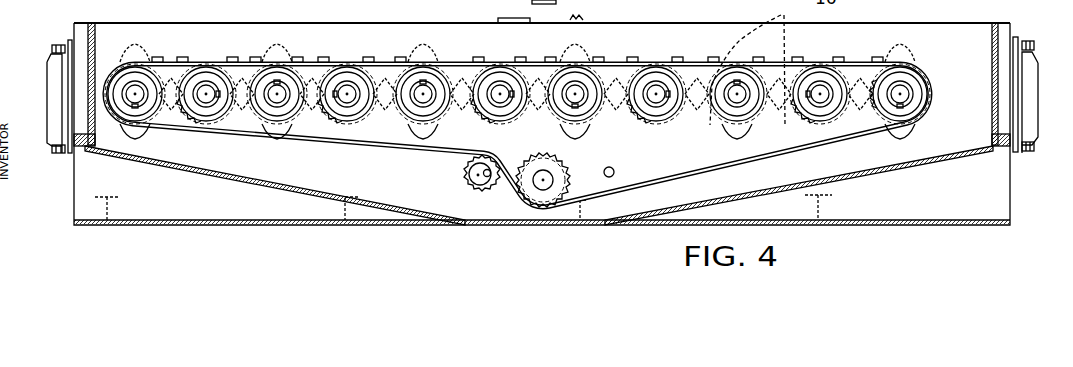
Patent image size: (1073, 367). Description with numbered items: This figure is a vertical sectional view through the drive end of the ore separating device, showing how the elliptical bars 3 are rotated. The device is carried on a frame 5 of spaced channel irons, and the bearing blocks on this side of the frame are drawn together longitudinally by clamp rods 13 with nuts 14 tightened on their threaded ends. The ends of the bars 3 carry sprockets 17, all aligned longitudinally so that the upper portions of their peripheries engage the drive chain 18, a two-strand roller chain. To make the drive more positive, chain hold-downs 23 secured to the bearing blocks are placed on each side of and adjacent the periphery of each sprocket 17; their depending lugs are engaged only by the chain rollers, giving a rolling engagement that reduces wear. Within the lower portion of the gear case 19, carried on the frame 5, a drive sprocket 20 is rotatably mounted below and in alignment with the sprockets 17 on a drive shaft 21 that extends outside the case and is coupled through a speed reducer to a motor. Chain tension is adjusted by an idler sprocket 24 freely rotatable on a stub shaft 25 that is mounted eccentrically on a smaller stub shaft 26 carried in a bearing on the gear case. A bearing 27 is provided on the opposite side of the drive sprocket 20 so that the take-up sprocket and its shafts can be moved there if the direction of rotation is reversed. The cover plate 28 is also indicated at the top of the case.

The bars 3 is at (751, 63).
The frame 5 is at (987, 192).
The clamp rods 13 is at (72, 40).
The nuts 14 is at (55, 43).
The sprockets 17 is at (437, 66).
The drive chain 18 is at (657, 62).
The gear case 19 is at (237, 182).
The drive sprocket 20 is at (550, 162).
The drive shaft 21 is at (543, 187).
The chain hold-downs 23 is at (370, 55).
The idler sprocket 24 is at (462, 188).
The stub shaft 25 is at (477, 177).
The smaller stub shaft 26 is at (487, 177).
The bearing 27 is at (608, 177).
The cover plate 28 is at (490, 11).